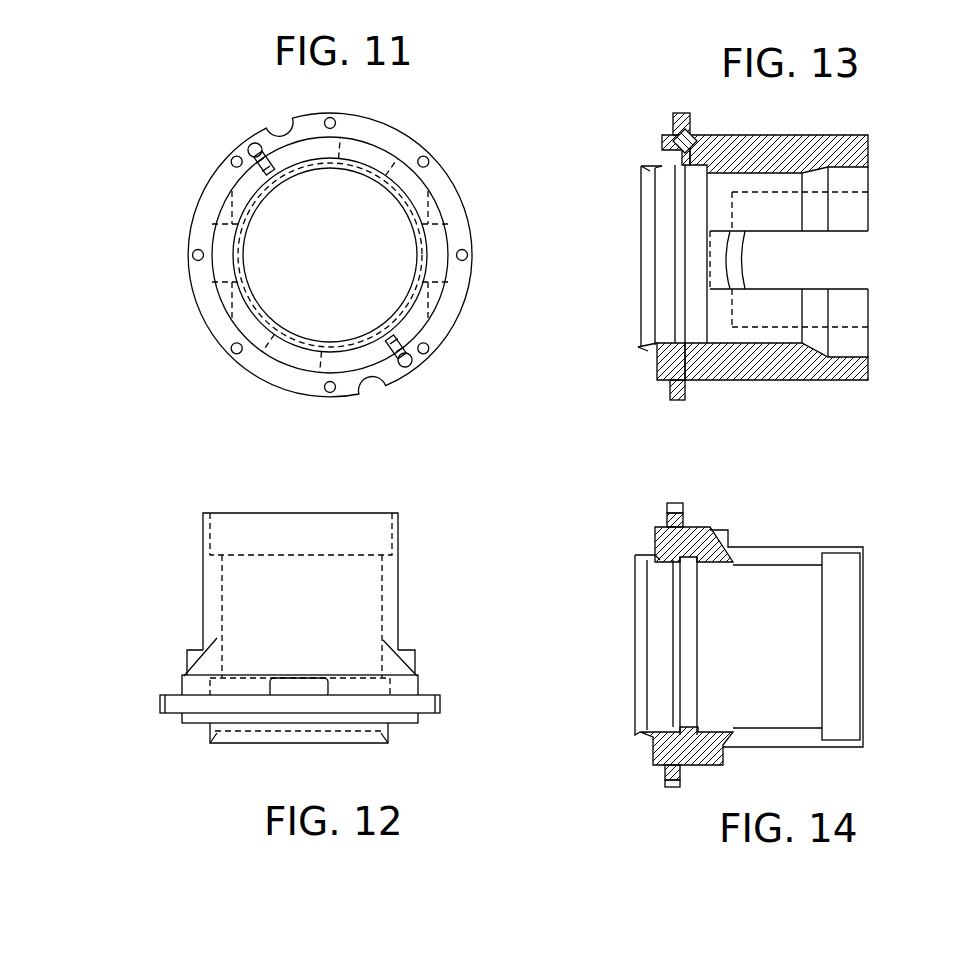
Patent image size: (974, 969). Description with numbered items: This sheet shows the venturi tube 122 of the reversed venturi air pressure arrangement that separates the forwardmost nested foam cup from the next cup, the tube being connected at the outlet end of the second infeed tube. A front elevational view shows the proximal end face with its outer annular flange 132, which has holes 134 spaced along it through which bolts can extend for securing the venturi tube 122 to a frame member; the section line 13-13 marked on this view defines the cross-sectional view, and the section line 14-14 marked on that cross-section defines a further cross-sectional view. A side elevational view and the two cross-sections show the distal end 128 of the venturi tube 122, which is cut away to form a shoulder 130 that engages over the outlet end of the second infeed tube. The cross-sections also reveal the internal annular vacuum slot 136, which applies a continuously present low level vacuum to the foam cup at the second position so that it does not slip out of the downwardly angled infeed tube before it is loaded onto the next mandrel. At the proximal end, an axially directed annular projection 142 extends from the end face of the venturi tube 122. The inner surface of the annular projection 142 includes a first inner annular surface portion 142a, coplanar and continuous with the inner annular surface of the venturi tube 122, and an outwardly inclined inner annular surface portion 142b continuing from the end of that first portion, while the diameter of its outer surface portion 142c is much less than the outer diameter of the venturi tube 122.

In FIG. 11, the section line 13- 13 is at (288, 203).
In FIG. 13, the section line 14- 14 is at (620, 258).
In FIG. 11, the venturi tube 122 is at (470, 151).
In FIG. 12, the venturi tube 122 is at (422, 602).
In FIG. 13, the venturi tube 122 is at (635, 132).
In FIG. 14, the venturi tube 122 is at (607, 522).
In FIG. 12, the distal end 128 is at (395, 518).
In FIG. 13, the distal end 128 is at (870, 153).
In FIG. 14, the distal end 128 is at (867, 551).
In FIG. 12, the shoulder 130 is at (385, 553).
In FIG. 13, the shoulder 130 is at (838, 354).
In FIG. 14, the shoulder 130 is at (838, 560).
In FIG. 11, the outer annular flange 132 is at (455, 212).
In FIG. 12, the outer annular flange 132 is at (420, 688).
In FIG. 13, the outer annular flange 132 is at (670, 393).
In FIG. 14, the outer annular flange 132 is at (677, 503).
In FIG. 11, the holes 134 is at (468, 257).
In FIG. 12, the holes 134 is at (432, 702).
In FIG. 14, the holes 134 is at (666, 512).
In FIG. 13, the internal annular vacuum slot 136 is at (698, 342).
In FIG. 14, the internal annular vacuum slot 136 is at (687, 733).
In FIG. 11, the annular projection 142 is at (392, 192).
In FIG. 12, the annular projection 142 is at (389, 737).
In FIG. 13, the annular projection 142 is at (650, 160).
In FIG. 14, the annular projection 142 is at (637, 737).
In FIG. 13, the first inner annular surface portion 142a is at (657, 171).
In FIG. 13, the outwardly inclined inner annular surface portion 142b is at (642, 174).
In FIG. 13, the outer surface portion 142c is at (647, 351).